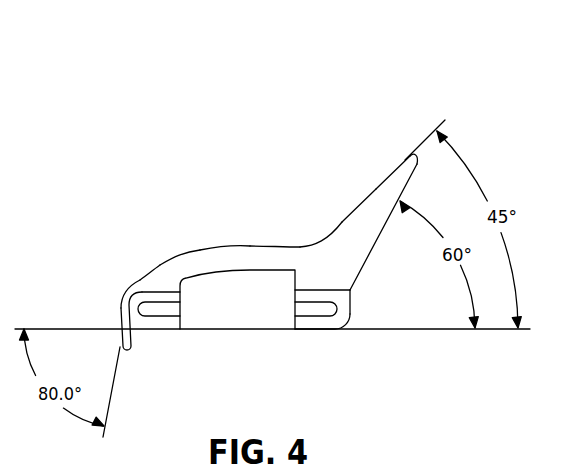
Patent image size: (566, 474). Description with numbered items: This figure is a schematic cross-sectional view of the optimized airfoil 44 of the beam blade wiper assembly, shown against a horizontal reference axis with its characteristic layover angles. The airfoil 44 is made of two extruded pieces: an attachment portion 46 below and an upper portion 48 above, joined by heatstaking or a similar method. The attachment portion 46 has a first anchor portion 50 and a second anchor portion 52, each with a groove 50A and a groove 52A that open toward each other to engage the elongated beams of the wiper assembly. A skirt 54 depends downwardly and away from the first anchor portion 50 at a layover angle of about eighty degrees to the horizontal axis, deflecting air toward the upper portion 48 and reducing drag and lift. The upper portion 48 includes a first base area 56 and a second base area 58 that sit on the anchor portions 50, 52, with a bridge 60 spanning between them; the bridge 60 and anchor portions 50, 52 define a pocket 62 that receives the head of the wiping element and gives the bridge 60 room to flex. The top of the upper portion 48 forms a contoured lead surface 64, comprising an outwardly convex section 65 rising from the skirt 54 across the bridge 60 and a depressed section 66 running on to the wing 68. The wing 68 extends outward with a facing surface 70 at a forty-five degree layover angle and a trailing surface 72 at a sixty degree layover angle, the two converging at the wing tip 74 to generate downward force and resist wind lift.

The airfoil 44 is at (168, 198).
The attachment portion 46 is at (308, 336).
The upper portion 48 is at (152, 262).
The first anchor portion 50 is at (160, 330).
The groove 50A is at (186, 309).
The second anchor portion 52 is at (320, 330).
The groove 52A is at (296, 307).
The skirt 54 is at (126, 348).
The first base area 56 is at (148, 278).
The second base area 58 is at (330, 278).
The bridge 60 is at (215, 252).
The pocket 62 is at (237, 304).
The contoured lead surface 64 is at (238, 247).
The outwardly convex section 65 is at (182, 252).
The depressed section 66 is at (298, 247).
The wing 68 is at (372, 153).
The facing surface 70 is at (365, 198).
The trailing surface 72 is at (380, 232).
The wing tip 74 is at (413, 153).